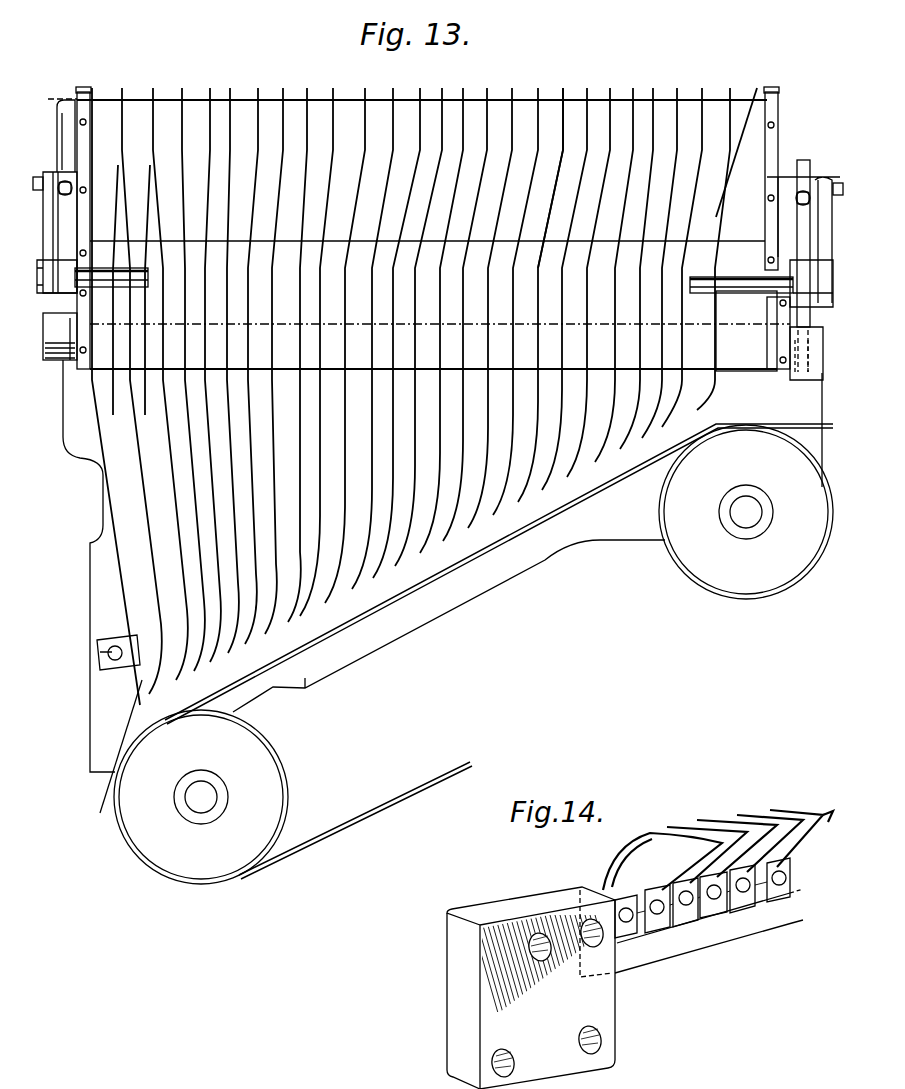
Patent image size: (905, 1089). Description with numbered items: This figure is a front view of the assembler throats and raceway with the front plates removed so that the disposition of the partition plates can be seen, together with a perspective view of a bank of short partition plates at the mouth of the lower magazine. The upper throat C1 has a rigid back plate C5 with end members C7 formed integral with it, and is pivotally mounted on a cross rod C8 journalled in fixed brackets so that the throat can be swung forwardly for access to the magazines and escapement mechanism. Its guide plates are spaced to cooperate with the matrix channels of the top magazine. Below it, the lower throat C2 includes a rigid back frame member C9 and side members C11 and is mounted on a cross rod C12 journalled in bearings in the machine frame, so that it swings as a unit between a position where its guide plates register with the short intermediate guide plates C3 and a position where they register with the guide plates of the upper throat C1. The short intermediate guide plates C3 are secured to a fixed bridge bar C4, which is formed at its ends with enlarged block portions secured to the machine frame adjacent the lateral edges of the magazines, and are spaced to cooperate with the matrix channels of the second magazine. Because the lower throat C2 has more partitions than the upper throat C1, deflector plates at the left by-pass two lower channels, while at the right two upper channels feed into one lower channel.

In FIG. 13, the upper throat C1 is at (576, 97).
In FIG. 13, the lower throat C2 is at (488, 289).
In FIG. 13, the short intermediate guide plates C3 is at (66, 200).
In FIG. 14, the short intermediate guide plates C3 is at (672, 836).
In FIG. 13, the bridge bar C4 is at (116, 190).
In FIG. 14, the bridge bar C4 is at (695, 942).
In FIG. 13, the back plate C5 is at (660, 108).
In FIG. 13, the end members C7 is at (85, 153).
In FIG. 13, the cross rod C8 is at (159, 277).
In FIG. 13, the back frame member C9 is at (607, 375).
In FIG. 13, the side members C11 is at (77, 360).
In FIG. 13, the cross rod C12 is at (808, 365).